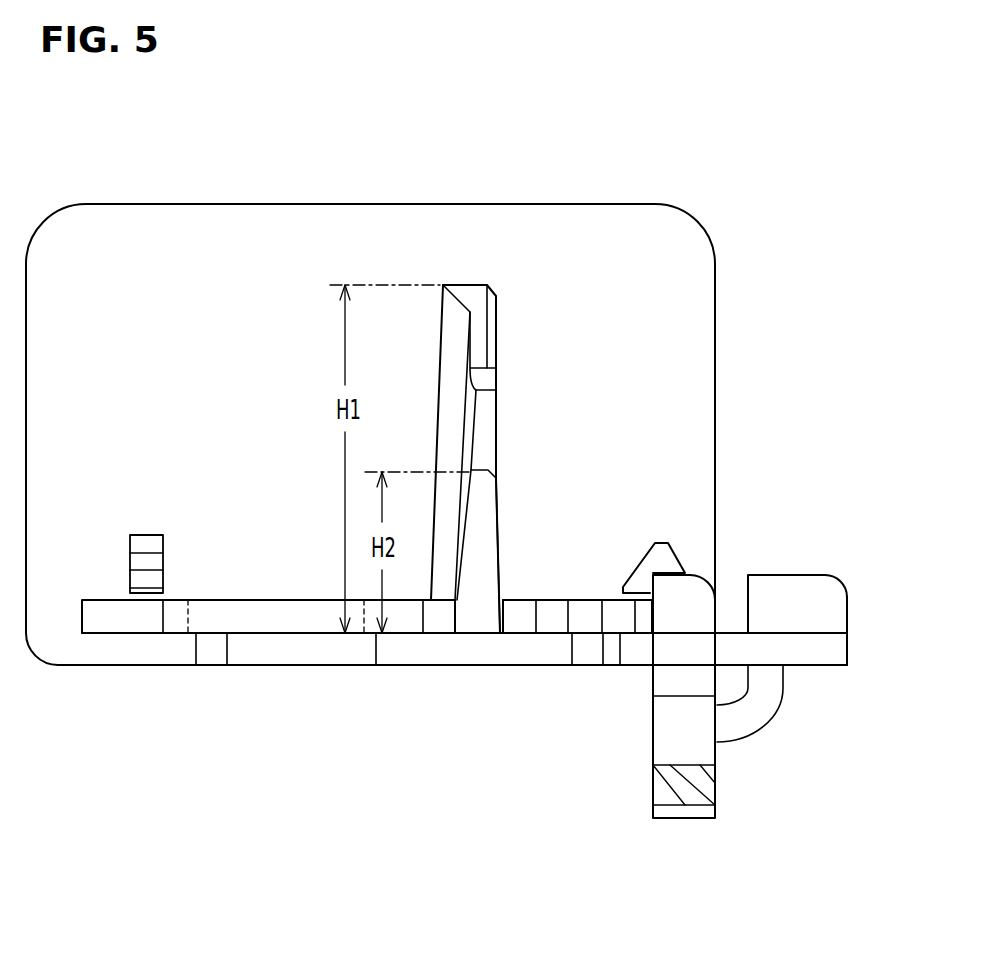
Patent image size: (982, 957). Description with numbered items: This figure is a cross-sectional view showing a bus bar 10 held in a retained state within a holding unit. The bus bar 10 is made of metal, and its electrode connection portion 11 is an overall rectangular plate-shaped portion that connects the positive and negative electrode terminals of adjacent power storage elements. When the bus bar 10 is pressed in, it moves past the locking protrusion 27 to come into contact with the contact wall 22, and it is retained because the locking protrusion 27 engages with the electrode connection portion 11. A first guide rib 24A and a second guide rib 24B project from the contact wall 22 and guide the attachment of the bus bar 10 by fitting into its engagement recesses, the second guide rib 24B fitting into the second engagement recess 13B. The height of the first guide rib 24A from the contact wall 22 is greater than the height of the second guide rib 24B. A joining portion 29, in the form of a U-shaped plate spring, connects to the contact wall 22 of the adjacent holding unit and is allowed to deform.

The bus bar 10 is at (105, 652).
The electrode connection portion 11 is at (138, 625).
The second engagement recess 13B is at (497, 617).
The contact wall 22 is at (544, 652).
The first guide rib 24A is at (479, 292).
The second guide rib 24B is at (483, 500).
The locking protrusion 27 is at (148, 576).
The joining portion 29 is at (665, 748).